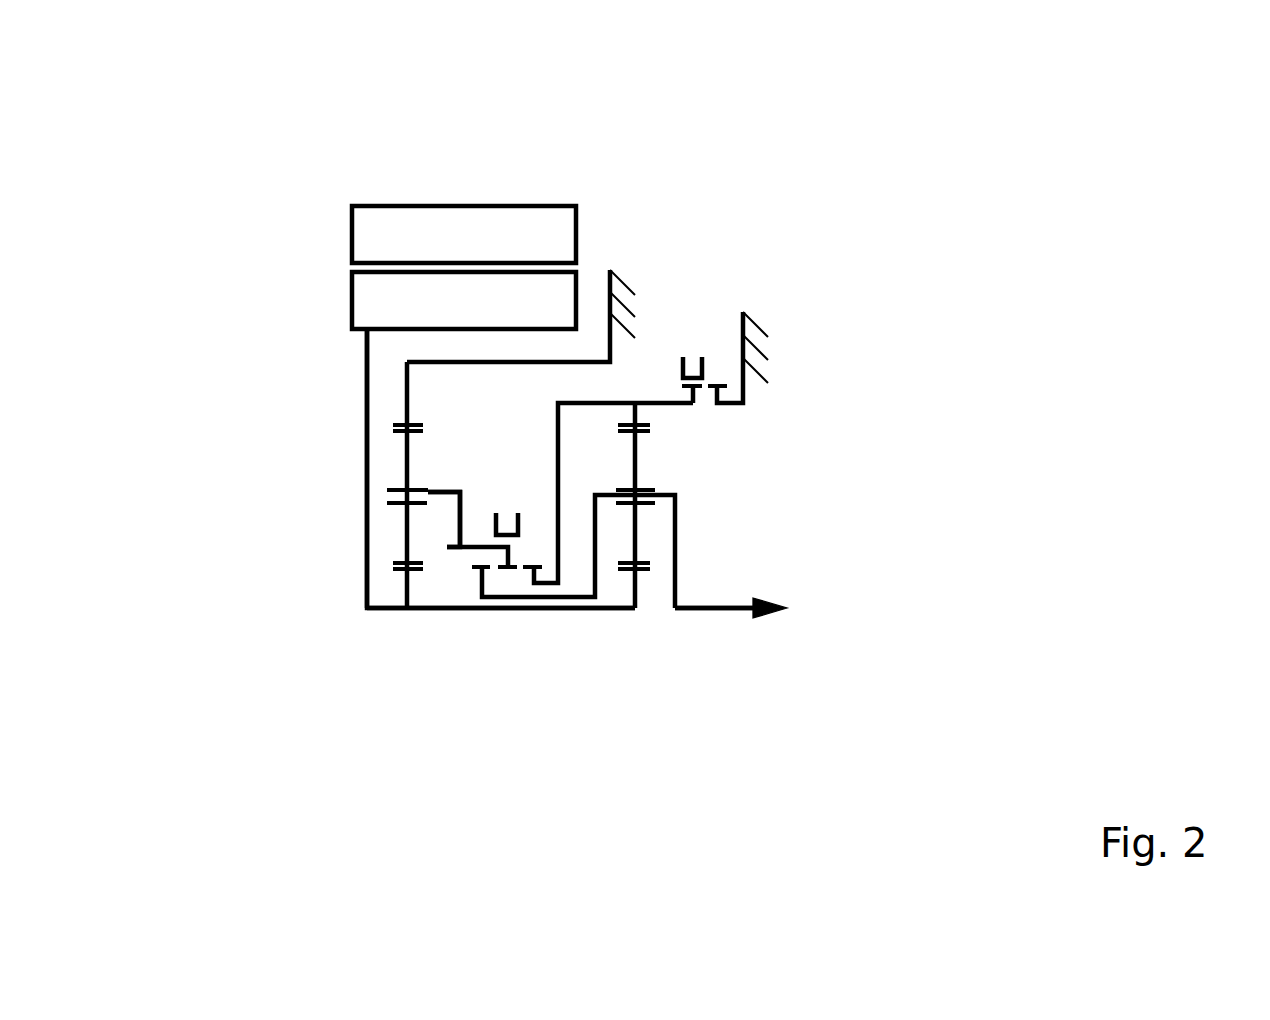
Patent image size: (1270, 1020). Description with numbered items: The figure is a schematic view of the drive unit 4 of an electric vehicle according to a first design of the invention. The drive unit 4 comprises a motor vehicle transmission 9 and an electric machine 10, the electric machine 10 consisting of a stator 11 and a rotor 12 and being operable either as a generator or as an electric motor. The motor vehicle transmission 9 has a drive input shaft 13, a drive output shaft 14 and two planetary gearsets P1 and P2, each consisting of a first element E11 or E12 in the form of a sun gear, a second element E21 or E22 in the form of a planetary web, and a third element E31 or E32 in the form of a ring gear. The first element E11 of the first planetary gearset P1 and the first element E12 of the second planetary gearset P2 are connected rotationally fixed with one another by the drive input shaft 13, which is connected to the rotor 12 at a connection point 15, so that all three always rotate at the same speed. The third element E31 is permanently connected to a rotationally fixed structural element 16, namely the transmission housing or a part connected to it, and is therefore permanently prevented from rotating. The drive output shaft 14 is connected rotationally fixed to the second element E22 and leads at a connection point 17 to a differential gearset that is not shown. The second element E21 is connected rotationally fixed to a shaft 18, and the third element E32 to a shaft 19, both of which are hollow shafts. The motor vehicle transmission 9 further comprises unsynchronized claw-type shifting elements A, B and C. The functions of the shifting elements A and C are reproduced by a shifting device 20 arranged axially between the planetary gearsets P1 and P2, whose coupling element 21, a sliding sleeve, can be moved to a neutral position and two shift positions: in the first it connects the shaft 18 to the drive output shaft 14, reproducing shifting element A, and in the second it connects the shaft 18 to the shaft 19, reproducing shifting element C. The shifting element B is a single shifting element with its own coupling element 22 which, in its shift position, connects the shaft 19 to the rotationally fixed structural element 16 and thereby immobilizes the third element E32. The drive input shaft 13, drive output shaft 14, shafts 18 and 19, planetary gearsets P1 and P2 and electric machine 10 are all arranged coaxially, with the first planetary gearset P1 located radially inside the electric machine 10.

The drive unit 4 is at (346, 158).
The motor vehicle transmission 9 is at (769, 248).
The electric machine 10 is at (414, 186).
The stator 11 is at (368, 232).
The rotor 12 is at (368, 300).
The drive input shaft 13 is at (453, 612).
The drive output shaft 14 is at (717, 608).
The connection point 15 is at (362, 622).
The rotationally fixed structural element 16 is at (621, 288).
The connection point 17 is at (770, 602).
The shaft 18 is at (447, 493).
The shaft 19 is at (590, 403).
The shifting device 20 is at (509, 582).
The coupling element 21 is at (497, 523).
The coupling element 22 is at (682, 367).
The shifting element A is at (491, 582).
The shifting element B is at (715, 360).
The shifting element C is at (531, 582).
The first element of the first planetary gearset E11 is at (407, 589).
The second element of the first planetary gearset E21 is at (385, 494).
The third element of the first planetary gearset E31 is at (407, 397).
The first element of the second planetary gearset E12 is at (637, 577).
The second element of the second planetary gearset E22 is at (660, 496).
The third element of the second planetary gearset E32 is at (638, 415).
The first planetary gearset P1 is at (407, 620).
The second planetary gearset P2 is at (635, 620).